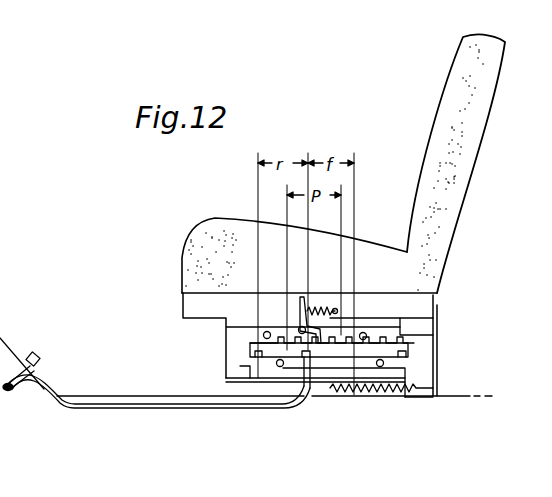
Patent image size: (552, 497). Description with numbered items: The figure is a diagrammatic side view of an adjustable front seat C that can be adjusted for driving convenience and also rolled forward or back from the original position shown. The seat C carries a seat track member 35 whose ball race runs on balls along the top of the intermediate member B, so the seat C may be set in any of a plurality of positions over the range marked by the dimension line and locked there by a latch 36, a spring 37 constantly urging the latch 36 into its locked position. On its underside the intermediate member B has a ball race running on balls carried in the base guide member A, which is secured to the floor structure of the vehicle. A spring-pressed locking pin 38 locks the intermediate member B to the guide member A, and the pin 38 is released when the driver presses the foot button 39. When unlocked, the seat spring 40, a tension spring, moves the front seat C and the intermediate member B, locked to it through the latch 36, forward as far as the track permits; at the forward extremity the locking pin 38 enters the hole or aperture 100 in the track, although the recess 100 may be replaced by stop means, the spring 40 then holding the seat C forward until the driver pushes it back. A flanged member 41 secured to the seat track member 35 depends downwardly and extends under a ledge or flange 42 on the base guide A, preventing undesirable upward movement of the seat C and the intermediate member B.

The front seat C is at (210, 235).
The seat track member 35 is at (183, 318).
The latch 36 is at (300, 302).
The spring 37 is at (332, 297).
The spring-pressed locking pin 38 is at (320, 360).
The foot button 39 is at (38, 356).
The seat spring 40 is at (413, 395).
The flanged member 41 is at (226, 377).
The ledge or flange 42 is at (248, 369).
The hole or aperture 100 is at (365, 352).
The intermediate member B is at (408, 350).
The base guide member A is at (407, 382).